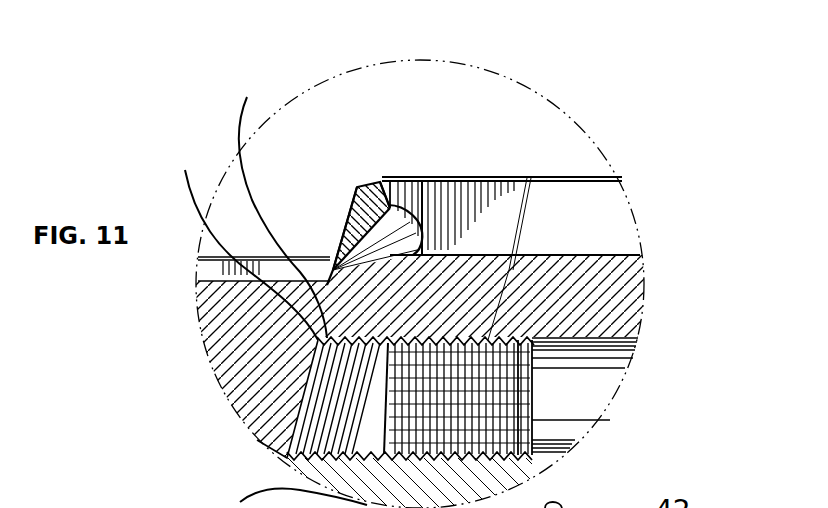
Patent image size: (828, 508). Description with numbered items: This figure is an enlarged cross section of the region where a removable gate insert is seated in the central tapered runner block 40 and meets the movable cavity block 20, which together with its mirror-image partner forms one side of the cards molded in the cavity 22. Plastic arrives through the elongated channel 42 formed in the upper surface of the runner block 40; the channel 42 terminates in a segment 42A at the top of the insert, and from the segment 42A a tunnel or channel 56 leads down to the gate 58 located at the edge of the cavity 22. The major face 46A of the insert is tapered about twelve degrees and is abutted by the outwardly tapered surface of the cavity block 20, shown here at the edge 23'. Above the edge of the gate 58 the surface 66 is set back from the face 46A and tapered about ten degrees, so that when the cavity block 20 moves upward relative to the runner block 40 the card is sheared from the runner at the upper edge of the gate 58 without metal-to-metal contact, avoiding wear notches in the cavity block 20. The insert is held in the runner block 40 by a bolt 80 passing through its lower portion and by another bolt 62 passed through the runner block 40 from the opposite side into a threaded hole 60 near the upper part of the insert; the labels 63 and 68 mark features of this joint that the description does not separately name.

The cavity block 20 is at (238, 366).
The cavity 22 is at (213, 280).
The nozzle surface 23' is at (239, 233).
The runner block 40 is at (612, 287).
The elongated channel 42 is at (606, 207).
The channel segment 42A is at (481, 185).
The insert face 46A is at (283, 196).
The tunnel or channel 56 is at (356, 185).
The gate 58 is at (325, 266).
The threaded hole 60 is at (300, 440).
The threaded fastener 62 is at (572, 397).
The shoulder 63 is at (625, 362).
The setback surface 66 is at (335, 215).
The tip surface 68 is at (372, 170).
The threaded fastener 80 is at (331, 483).